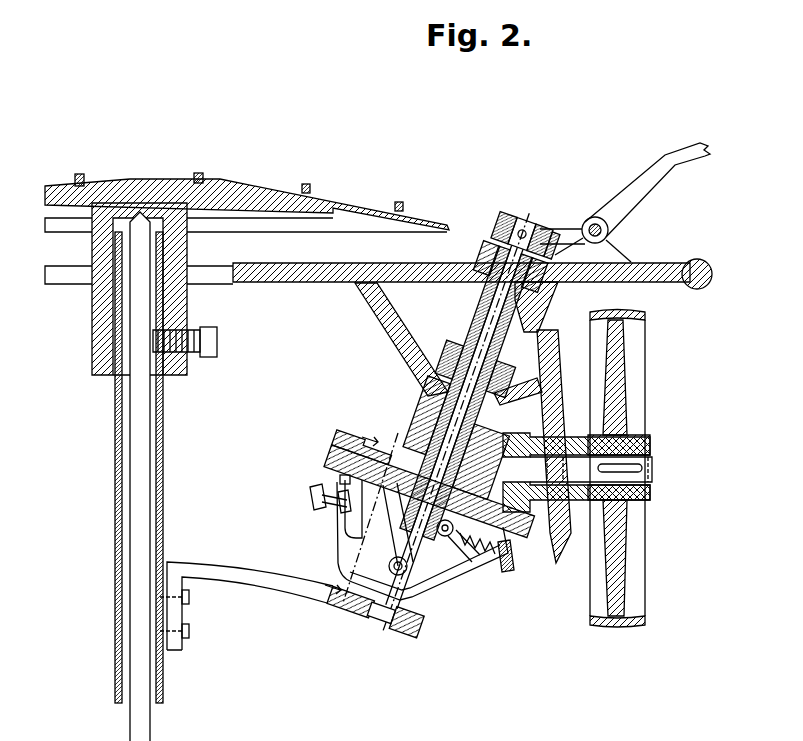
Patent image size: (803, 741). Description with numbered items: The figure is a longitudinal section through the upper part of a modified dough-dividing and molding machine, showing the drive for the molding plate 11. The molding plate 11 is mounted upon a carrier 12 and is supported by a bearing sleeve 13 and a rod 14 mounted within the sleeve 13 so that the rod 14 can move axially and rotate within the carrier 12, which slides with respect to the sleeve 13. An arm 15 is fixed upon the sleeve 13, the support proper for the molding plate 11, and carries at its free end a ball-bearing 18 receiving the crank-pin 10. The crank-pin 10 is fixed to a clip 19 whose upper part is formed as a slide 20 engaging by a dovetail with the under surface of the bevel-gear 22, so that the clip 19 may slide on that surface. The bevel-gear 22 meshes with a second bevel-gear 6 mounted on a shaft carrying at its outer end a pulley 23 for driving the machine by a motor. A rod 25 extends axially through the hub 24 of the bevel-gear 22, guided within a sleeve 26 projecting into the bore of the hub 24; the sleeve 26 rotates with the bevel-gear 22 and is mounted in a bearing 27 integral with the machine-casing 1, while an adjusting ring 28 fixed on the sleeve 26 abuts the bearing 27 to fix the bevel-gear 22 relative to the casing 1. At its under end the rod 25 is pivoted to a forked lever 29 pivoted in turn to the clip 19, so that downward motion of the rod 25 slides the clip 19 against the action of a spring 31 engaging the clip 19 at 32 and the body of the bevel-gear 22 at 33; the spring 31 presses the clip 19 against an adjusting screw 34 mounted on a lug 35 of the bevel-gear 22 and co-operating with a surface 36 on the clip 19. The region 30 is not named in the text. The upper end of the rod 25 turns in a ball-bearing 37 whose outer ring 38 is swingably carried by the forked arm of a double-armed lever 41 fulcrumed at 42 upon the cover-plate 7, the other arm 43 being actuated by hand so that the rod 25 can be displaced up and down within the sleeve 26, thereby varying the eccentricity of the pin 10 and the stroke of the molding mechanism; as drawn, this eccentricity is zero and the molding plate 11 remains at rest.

The machine-casing 1 is at (548, 316).
The second bevel-gear 6 is at (508, 450).
The cover-plate 7 is at (681, 262).
The crank-pin 10 is at (378, 620).
The molding plate 11 is at (352, 198).
The carrier 12 is at (178, 258).
The bearing sleeve 13 is at (165, 496).
The rod 14 is at (142, 538).
The arm 15 is at (264, 588).
The ball-bearing 18 is at (400, 628).
The clip 19 is at (418, 600).
The slide 20 is at (330, 478).
The bevel-gear 22 is at (340, 445).
The pulley 23 is at (641, 561).
The hub 24 is at (421, 421).
The rod 25 is at (400, 527).
The sleeve 26 is at (500, 347).
The bearing 27 is at (424, 396).
The adjusting ring 28 is at (505, 375).
The forked lever 29 is at (394, 554).
The carrier plate 30 is at (470, 504).
The spring 31 is at (484, 553).
The engagement point of spring on clip 32 is at (455, 555).
The engagement point of spring on bevel-gear 33 is at (513, 565).
The adjusting screw 34 is at (327, 512).
The lug 35 is at (312, 497).
The surface 36 is at (340, 540).
The ball-bearing 37 is at (538, 234).
The outer ring 38 is at (501, 216).
The double-armed lever 41 is at (575, 229).
The fulcrum 42 is at (620, 247).
The hand-actuated arm 43 is at (690, 150).